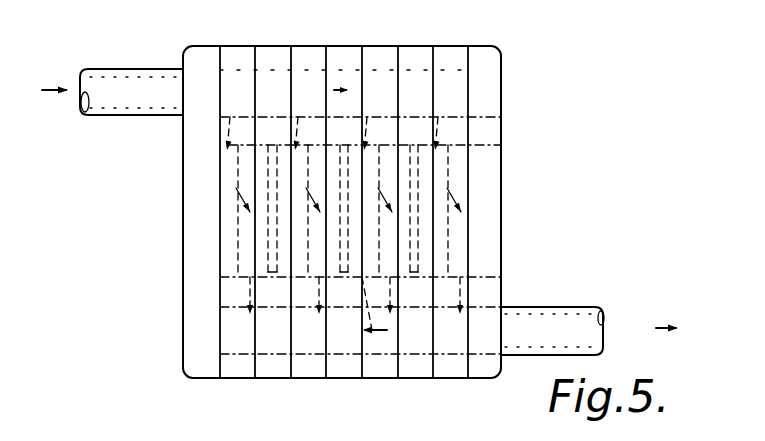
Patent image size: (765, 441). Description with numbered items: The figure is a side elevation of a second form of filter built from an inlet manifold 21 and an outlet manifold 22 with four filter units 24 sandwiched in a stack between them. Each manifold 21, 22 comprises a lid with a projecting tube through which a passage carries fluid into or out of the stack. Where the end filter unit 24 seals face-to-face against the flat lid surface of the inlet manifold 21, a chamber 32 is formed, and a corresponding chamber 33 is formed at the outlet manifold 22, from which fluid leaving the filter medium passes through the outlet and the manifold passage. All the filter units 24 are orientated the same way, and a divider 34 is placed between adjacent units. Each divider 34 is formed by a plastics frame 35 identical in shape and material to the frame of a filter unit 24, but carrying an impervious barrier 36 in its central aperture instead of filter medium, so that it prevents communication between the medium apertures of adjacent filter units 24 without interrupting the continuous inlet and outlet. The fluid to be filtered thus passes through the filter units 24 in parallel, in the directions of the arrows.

The inlet manifold 21 is at (112, 66).
The outlet manifold 22 is at (379, 212).
The filter unit 24 is at (233, 55).
The chamber 32 is at (222, 234).
The chamber 33 is at (462, 196).
The divider 34 is at (266, 55).
The frame 35 is at (278, 340).
The impervious barrier 36 is at (268, 252).